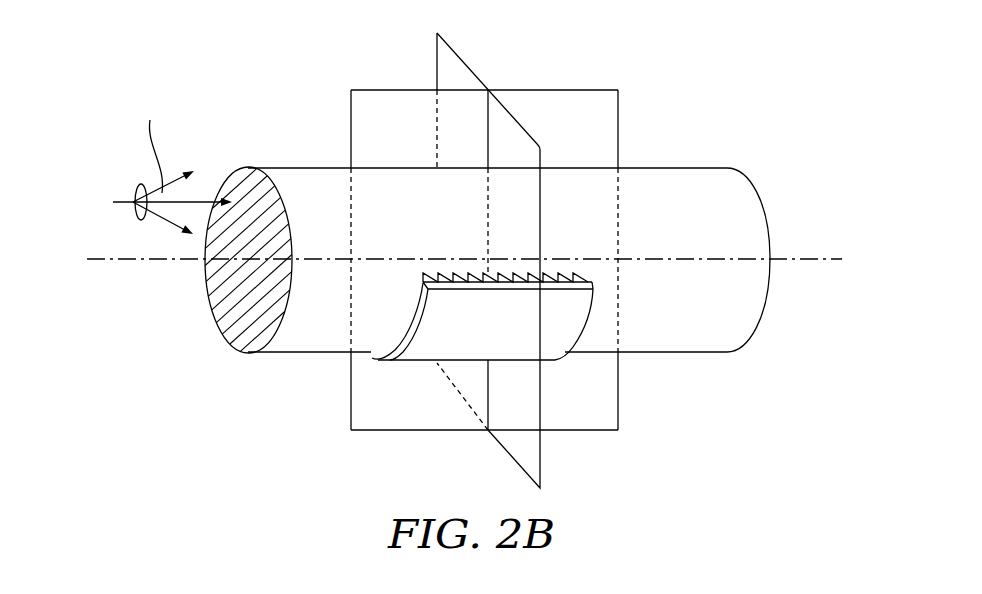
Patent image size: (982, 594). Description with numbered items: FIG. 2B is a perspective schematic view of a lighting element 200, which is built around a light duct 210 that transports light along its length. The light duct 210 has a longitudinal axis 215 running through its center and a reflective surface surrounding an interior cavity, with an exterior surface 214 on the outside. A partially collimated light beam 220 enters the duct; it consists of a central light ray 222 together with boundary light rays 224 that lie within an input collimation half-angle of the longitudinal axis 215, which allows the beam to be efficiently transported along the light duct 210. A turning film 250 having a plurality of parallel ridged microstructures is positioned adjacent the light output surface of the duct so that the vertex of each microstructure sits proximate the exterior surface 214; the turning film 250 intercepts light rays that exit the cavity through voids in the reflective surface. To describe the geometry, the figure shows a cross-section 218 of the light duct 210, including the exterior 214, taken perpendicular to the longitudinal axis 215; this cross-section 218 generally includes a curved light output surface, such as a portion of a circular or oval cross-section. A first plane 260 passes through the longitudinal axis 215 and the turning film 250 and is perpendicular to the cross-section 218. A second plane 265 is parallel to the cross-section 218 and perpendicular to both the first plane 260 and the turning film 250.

The lighting element 200 is at (740, 119).
The light duct 210 is at (671, 167).
The exterior surface 214 is at (717, 338).
The longitudinal axis 215 is at (800, 260).
The cross-section 218 is at (237, 325).
The partially collimated light beam 220 is at (138, 193).
The central light ray 222 is at (197, 200).
The boundary light rays 224 is at (158, 216).
The turning film 250 is at (391, 368).
The first plane 260 is at (595, 110).
The second plane 265 is at (447, 70).